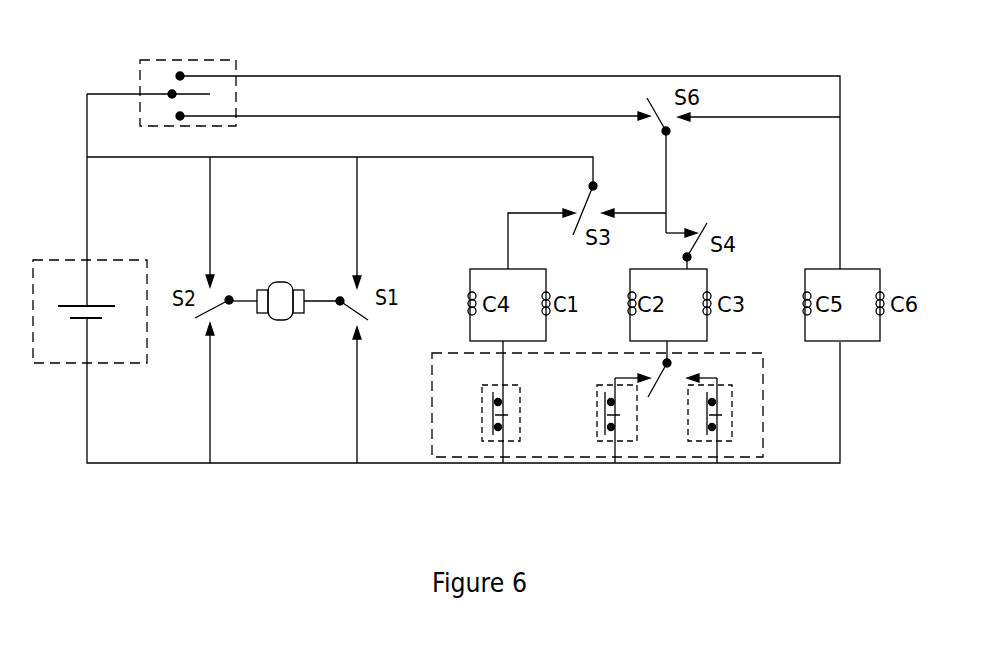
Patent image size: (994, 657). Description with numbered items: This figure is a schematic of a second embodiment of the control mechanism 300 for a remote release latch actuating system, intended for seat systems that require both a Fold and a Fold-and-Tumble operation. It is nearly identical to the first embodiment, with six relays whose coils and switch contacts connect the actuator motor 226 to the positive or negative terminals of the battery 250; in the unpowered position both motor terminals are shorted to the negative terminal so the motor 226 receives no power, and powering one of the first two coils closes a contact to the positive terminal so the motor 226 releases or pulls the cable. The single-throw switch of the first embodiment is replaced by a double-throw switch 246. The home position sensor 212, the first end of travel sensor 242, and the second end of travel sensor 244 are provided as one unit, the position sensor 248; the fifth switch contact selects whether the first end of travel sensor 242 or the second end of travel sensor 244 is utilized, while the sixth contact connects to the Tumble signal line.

The control mechanism 300 is at (482, 29).
The double-throw switch 246 is at (212, 62).
The battery 250 is at (60, 260).
The actuator motor 226 is at (278, 320).
The position sensor 248 is at (665, 424).
The home position sensor 212 is at (490, 443).
The first end of travel sensor 242 is at (602, 443).
The second end of travel sensor 244 is at (693, 443).